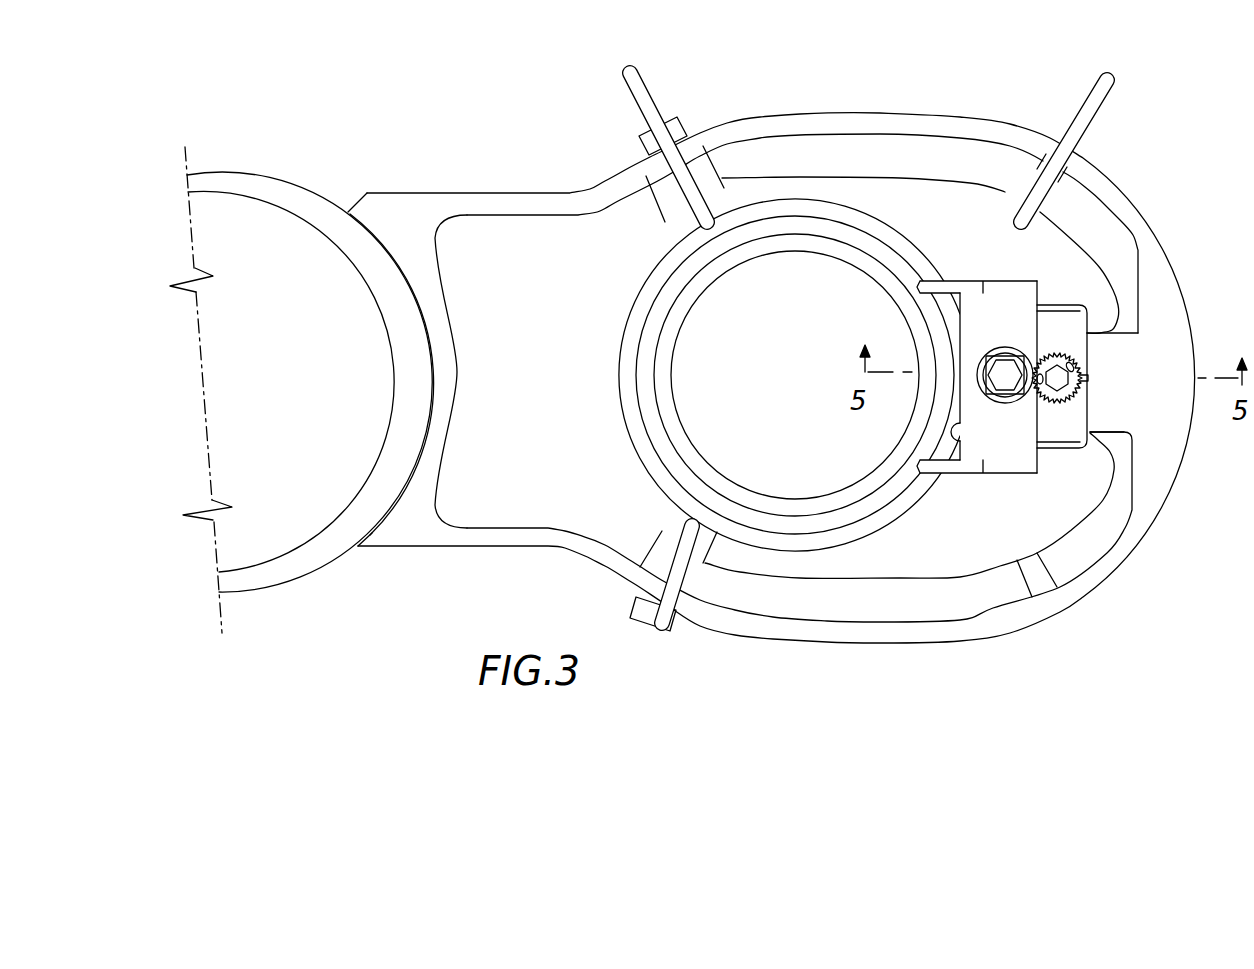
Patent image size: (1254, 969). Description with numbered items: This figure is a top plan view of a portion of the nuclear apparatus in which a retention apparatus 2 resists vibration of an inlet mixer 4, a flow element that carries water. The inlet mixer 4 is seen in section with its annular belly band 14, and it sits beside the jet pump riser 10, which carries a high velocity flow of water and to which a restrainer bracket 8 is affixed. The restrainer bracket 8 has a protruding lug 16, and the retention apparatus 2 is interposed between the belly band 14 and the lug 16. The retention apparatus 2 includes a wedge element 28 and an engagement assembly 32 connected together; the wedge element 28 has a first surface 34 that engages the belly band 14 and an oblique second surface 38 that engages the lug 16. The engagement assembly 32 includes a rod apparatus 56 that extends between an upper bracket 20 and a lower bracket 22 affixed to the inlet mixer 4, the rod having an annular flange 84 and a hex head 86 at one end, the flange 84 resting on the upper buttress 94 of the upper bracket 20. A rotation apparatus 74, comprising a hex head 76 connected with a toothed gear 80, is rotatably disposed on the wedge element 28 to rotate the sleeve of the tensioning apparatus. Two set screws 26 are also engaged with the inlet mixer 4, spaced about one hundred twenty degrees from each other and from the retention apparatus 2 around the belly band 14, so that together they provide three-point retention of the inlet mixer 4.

The retention apparatus 2 is at (1087, 308).
The inlet mixer 4 is at (873, 515).
The restrainer bracket 8 is at (940, 646).
The jet pump riser 10 is at (302, 577).
The belly band 14 is at (863, 548).
The lug 16 is at (1097, 440).
The upper bracket 20 is at (960, 282).
The lower bracket 22 is at (1062, 460).
The set screws 26 is at (682, 125).
The wedge element 28 is at (1090, 346).
The engagement assembly 32 is at (1015, 343).
The first surface 34 is at (960, 447).
The second surface 38 is at (1089, 392).
The rod apparatus 56 is at (993, 344).
The rotation apparatus 74 is at (1045, 343).
The hex head 76 is at (1049, 402).
The gear 80 is at (1082, 400).
The annular flange 84 is at (986, 360).
The hex head 86 is at (989, 388).
The upper buttress 94 is at (960, 404).